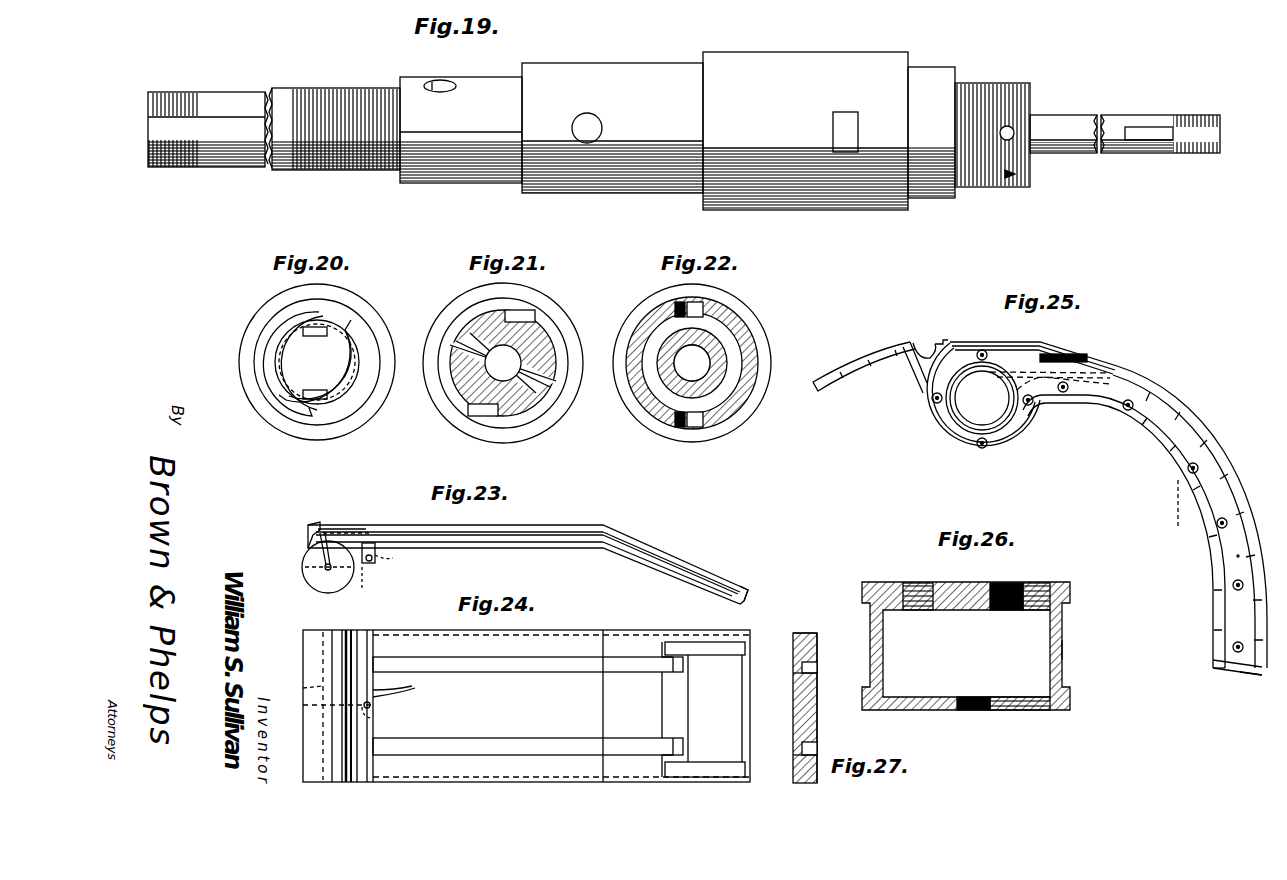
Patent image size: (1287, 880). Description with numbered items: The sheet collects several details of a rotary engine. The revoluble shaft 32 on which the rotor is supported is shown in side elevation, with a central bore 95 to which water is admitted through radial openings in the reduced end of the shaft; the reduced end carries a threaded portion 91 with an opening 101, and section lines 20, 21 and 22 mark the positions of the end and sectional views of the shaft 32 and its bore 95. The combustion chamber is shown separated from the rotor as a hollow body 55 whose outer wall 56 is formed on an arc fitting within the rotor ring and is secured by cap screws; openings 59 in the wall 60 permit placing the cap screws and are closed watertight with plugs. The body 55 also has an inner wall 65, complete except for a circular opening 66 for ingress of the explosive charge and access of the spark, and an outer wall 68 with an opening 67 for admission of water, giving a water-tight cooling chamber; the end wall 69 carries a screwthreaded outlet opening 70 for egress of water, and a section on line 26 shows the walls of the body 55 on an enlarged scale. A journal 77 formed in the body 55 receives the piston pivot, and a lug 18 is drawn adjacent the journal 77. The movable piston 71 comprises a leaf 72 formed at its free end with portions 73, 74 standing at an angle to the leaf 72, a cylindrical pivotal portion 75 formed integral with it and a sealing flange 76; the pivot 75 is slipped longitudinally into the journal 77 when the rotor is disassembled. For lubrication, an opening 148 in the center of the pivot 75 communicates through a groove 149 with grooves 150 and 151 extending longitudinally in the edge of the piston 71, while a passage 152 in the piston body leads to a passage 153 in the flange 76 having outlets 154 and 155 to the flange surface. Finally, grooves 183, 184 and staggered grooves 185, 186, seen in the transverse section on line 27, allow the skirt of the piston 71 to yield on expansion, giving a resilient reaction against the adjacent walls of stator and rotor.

In FIG. 25, the flange lug 18 is at (945, 342).
In FIG. 19, the section line 20- 20 is at (127, 67).
In FIG. 19, the section line 21-21 / slot 21 is at (424, 68).
In FIG. 19, the section line 22-22 / hole 22 is at (571, 53).
In FIG. 25, the section line 26— 26 is at (1117, 475).
In FIG. 24, the section line 27— 27 is at (655, 788).
In FIG. 19, the revoluble shaft 32 is at (762, 202).
In FIG. 20, the revoluble shaft 32 is at (372, 408).
In FIG. 21, the revoluble shaft 32 is at (517, 410).
In FIG. 22, the revoluble shaft 32 is at (652, 426).
In FIG. 25, the hollow body 55 is at (1080, 406).
In FIG. 25, the outer wall 56 is at (1142, 382).
In FIG. 25, the openings 59 is at (1197, 528).
In FIG. 26, the openings 59 is at (975, 710).
In FIG. 25, the wall 60 is at (1213, 583).
In FIG. 26, the wall 60 is at (895, 708).
In FIG. 26, the inner wall 65 is at (1062, 648).
In FIG. 25, the circular opening 66 is at (967, 420).
In FIG. 25, the opening 67 is at (1040, 356).
In FIG. 25, the outer wall 68 is at (1237, 556).
In FIG. 26, the outer wall 68 is at (870, 650).
In FIG. 25, the end wall 69 is at (1226, 672).
In FIG. 25, the screwthreaded outlet opening 70 is at (1237, 678).
In FIG. 23, the movable piston 71 is at (578, 524).
In FIG. 24, the movable piston 71 is at (526, 706).
In FIG. 27, the movable piston 71 is at (817, 712).
In FIG. 23, the leaf 72 is at (459, 520).
In FIG. 23, the angled end portion 73 is at (655, 537).
In FIG. 23, the angled end portion 74 is at (722, 567).
In FIG. 23, the cylindrical pivotal portion 75 is at (312, 589).
In FIG. 24, the cylindrical pivotal portion 75 is at (305, 658).
In FIG. 23, the sealing flange 76 is at (375, 561).
In FIG. 24, the sealing flange 76 is at (380, 688).
In FIG. 25, the journal 77 is at (927, 344).
In FIG. 19, the threaded collar 91 is at (968, 197).
In FIG. 21, the central bore 95 is at (503, 363).
In FIG. 22, the central bore 95 is at (692, 363).
In FIG. 19, the pin hole 101 is at (1006, 125).
In FIG. 23, the opening 148 is at (325, 565).
In FIG. 24, the opening 148 is at (305, 688).
In FIG. 23, the groove 149 is at (318, 537).
In FIG. 24, the groove 149 is at (325, 632).
In FIG. 23, the groove 150 is at (492, 530).
In FIG. 24, the groove 150 is at (560, 634).
In FIG. 27, the groove 150 is at (800, 632).
In FIG. 23, the groove 151 is at (483, 544).
In FIG. 27, the groove 151 is at (815, 632).
In FIG. 23, the passage 152 is at (342, 532).
In FIG. 24, the passage 152 is at (372, 718).
In FIG. 23, the passage 153 is at (372, 543).
In FIG. 24, the passage 153 is at (371, 707).
In FIG. 23, the outlet 154 is at (368, 582).
In FIG. 24, the outlet 154 is at (408, 689).
In FIG. 23, the outlet 155 is at (399, 561).
In FIG. 24, the groove 183 is at (710, 650).
In FIG. 27, the groove 183 is at (805, 660).
In FIG. 24, the groove 184 is at (694, 770).
In FIG. 27, the groove 184 is at (795, 768).
In FIG. 24, the groove 185 is at (628, 670).
In FIG. 27, the groove 185 is at (800, 675).
In FIG. 24, the groove 186 is at (631, 727).
In FIG. 27, the groove 186 is at (802, 745).